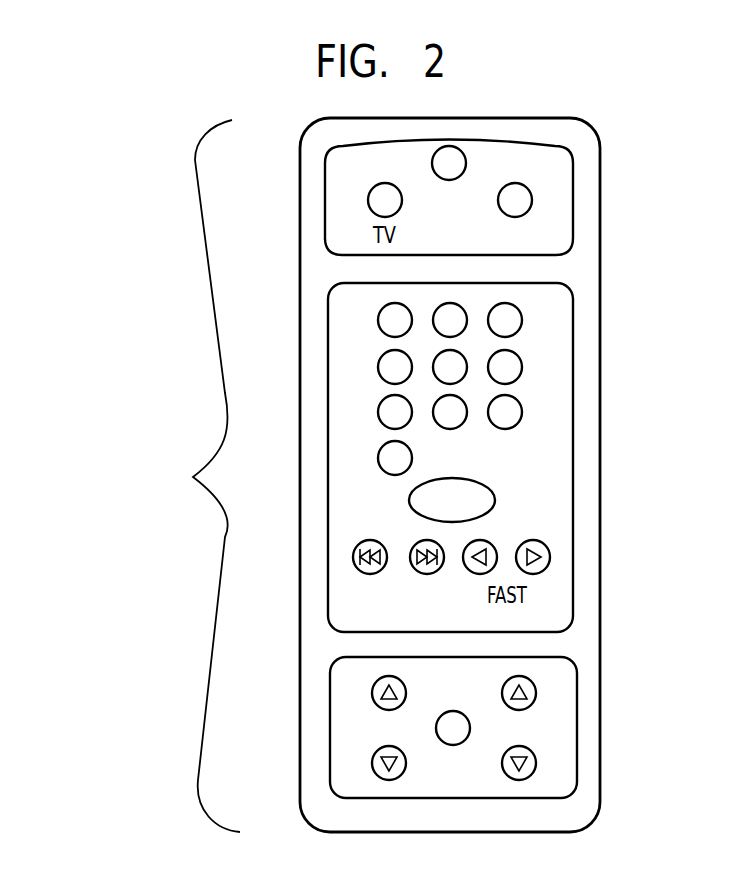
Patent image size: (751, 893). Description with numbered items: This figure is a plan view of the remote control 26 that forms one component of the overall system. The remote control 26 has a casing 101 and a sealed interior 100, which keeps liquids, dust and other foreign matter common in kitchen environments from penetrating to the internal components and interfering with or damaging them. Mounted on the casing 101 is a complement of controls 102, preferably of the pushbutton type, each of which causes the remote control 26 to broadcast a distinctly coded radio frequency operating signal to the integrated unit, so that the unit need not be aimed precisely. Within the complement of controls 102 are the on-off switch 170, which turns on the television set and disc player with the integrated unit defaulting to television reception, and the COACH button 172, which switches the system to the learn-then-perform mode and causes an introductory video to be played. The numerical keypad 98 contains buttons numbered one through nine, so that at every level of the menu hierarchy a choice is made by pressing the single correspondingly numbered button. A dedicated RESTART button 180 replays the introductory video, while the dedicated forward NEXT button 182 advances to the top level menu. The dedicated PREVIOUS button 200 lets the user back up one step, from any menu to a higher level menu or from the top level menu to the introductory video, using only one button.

The remote control 26 is at (625, 215).
The numerical keypad 98 is at (553, 359).
The interior 100 is at (565, 644).
The casing 101 is at (633, 752).
The complement of controls 102 is at (194, 476).
The on-off switch 170 is at (462, 151).
The COACH button 172 is at (531, 190).
The RESTART button 180 is at (478, 479).
The forward (NEXT) button 182 is at (418, 542).
The PREVIOUS button 200 is at (353, 556).